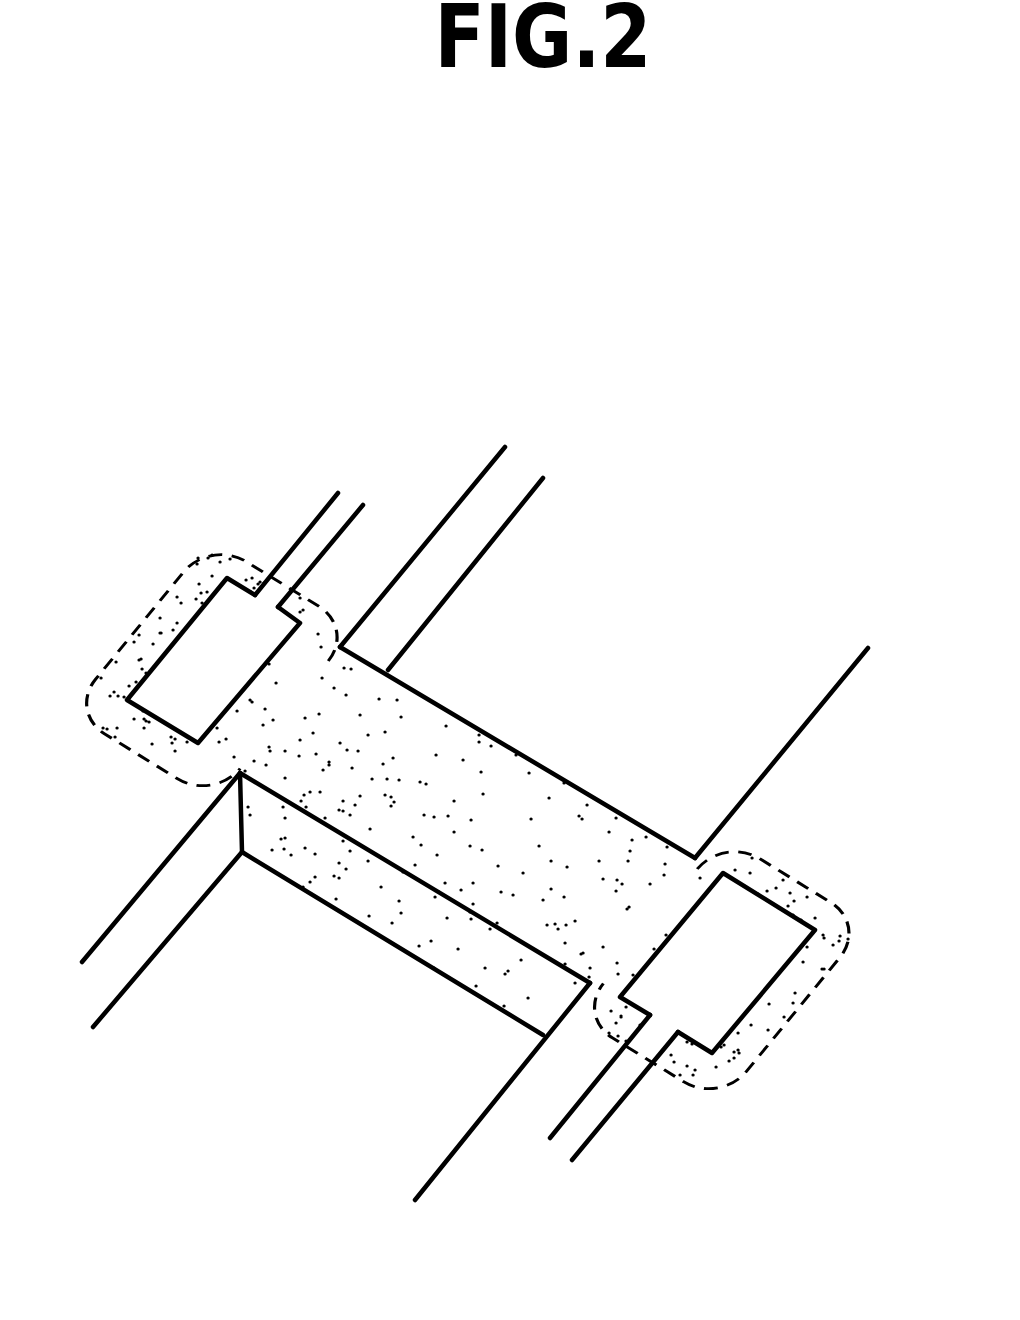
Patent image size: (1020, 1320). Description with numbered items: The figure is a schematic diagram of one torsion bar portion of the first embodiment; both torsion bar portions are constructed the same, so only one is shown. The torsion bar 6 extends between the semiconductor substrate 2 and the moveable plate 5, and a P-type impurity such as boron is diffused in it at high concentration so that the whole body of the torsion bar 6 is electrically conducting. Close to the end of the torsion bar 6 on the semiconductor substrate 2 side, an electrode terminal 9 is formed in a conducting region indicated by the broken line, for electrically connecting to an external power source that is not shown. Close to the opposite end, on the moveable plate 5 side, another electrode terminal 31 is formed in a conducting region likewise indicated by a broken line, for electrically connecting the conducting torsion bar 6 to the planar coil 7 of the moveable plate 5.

The semiconductor substrate 2 is at (448, 487).
The moveable plate 5 is at (810, 755).
The torsion bar 6 is at (503, 745).
The planar coil 7 is at (622, 1083).
The electrode terminal 9 is at (212, 647).
The electrode terminal 31 is at (763, 957).